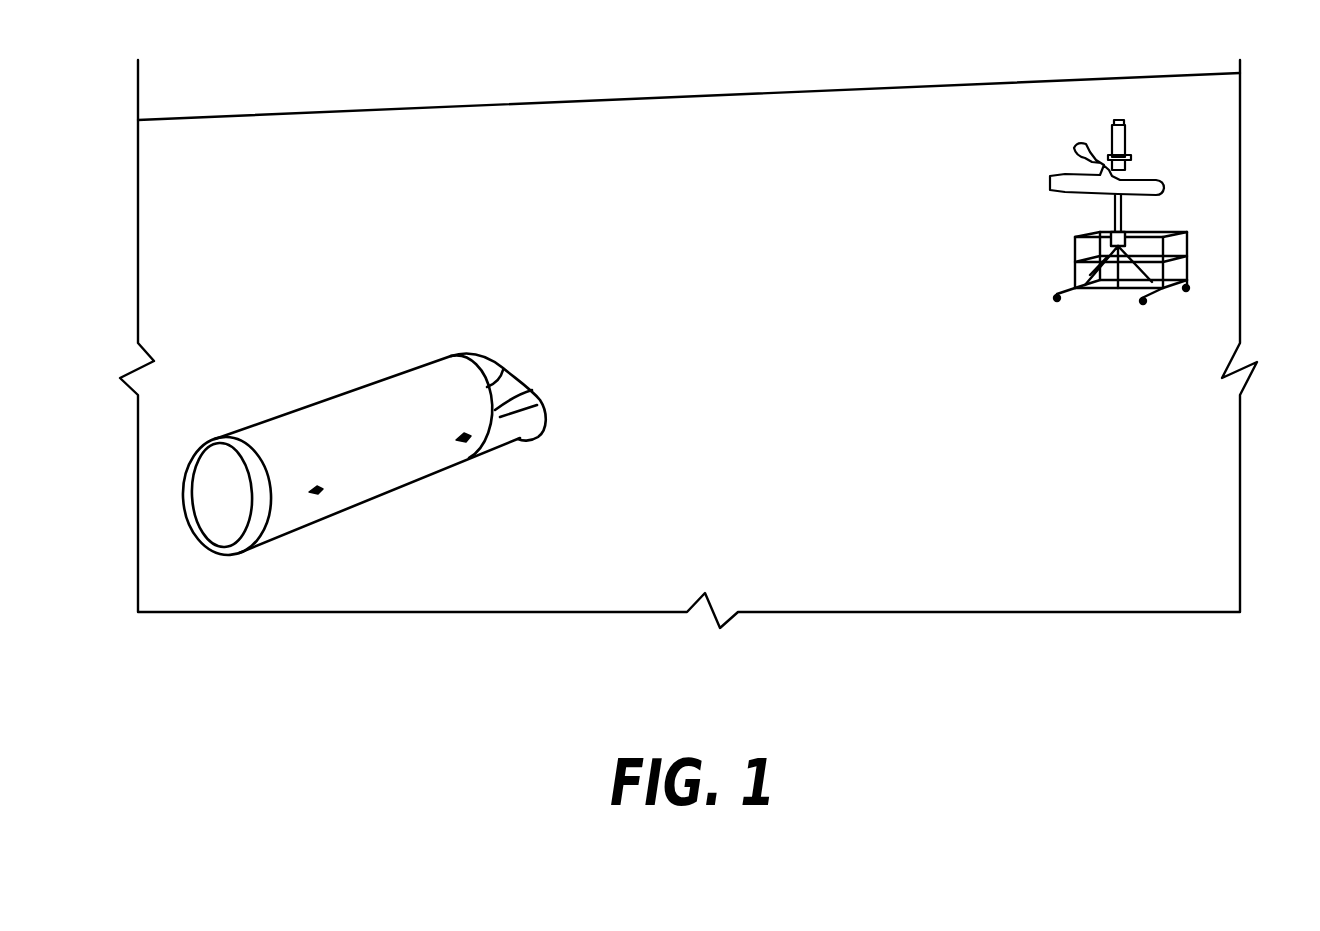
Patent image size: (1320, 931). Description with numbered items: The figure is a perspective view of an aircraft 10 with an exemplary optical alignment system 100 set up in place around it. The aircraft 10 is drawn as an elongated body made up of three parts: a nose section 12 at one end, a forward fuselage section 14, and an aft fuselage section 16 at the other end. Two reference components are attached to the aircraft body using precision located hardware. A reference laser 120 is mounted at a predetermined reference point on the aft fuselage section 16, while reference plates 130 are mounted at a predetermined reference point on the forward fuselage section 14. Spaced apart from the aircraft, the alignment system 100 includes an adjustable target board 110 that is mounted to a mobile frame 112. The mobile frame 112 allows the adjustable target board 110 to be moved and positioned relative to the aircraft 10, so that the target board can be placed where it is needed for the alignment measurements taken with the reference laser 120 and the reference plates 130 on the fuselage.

The optical alignment system 100 is at (127, 116).
The aircraft 10 is at (316, 479).
The nose section 12 is at (531, 426).
The forward fuselage section 14 is at (402, 475).
The aft fuselage section 16 is at (280, 490).
The reference laser 120 is at (316, 497).
The reference plates 130 is at (463, 444).
The adjustable target board 110 is at (1153, 188).
The mobile frame 112 is at (1147, 273).